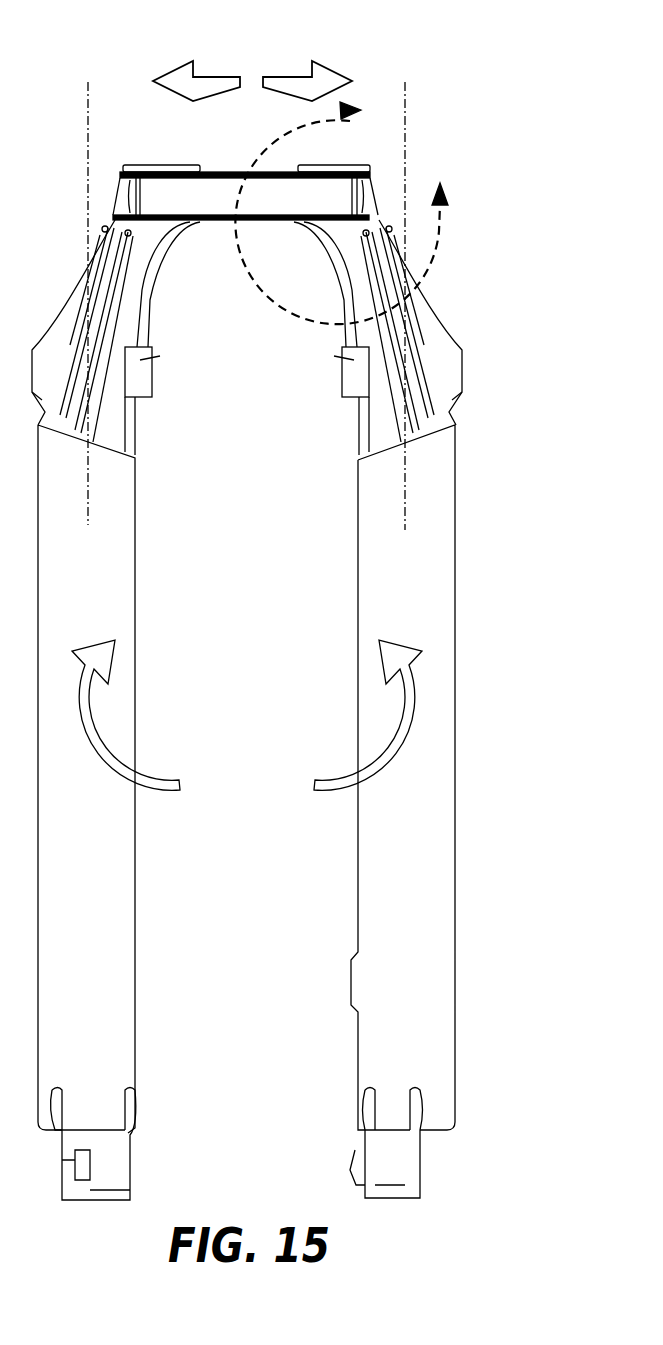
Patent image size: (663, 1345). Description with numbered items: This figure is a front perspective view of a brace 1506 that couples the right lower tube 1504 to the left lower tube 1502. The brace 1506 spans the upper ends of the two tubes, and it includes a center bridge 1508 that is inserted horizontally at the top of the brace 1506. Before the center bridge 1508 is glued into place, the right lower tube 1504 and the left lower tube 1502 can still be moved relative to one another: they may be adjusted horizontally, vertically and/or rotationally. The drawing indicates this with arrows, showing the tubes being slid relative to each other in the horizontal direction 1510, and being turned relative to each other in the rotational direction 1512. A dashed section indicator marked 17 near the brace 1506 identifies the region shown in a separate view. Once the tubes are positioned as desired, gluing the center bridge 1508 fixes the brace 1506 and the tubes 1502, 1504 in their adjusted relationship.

The left lower tube 1502 is at (455, 933).
The right lower tube 1504 is at (150, 1000).
The brace 1506 is at (485, 166).
The center bridge 1508 is at (230, 222).
The horizontal direction 1510 is at (283, 75).
The rotational direction 1512 is at (145, 778).
The section view FIG. 17 indicator 17 is at (346, 213).